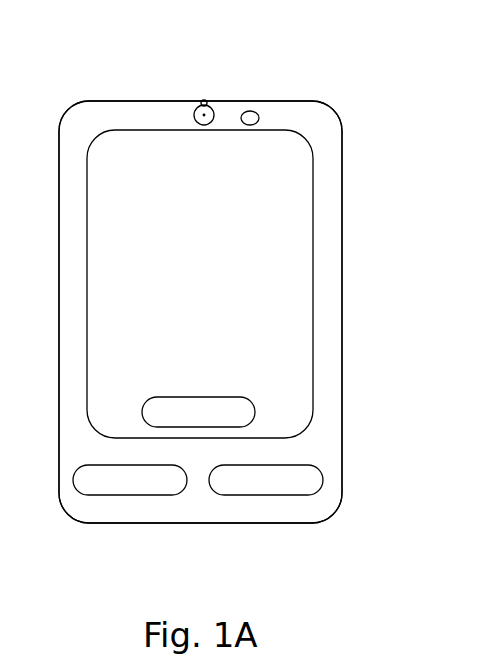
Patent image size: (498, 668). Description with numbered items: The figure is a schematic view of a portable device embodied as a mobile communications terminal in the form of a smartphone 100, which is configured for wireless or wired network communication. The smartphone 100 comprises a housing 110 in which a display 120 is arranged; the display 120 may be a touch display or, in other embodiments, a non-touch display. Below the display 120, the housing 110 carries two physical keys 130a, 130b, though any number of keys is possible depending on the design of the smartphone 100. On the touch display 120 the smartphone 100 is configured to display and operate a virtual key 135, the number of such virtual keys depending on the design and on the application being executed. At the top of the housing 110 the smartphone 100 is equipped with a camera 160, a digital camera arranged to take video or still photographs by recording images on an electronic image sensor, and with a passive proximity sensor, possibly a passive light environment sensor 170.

The smartphone 100 is at (84, 95).
The housing 110 is at (342, 216).
The display 120 is at (299, 288).
The virtual key 135 is at (255, 412).
The key 130a is at (132, 495).
The key 130b is at (323, 483).
The camera 160 is at (204, 101).
The passive light environment sensor 170 is at (251, 111).